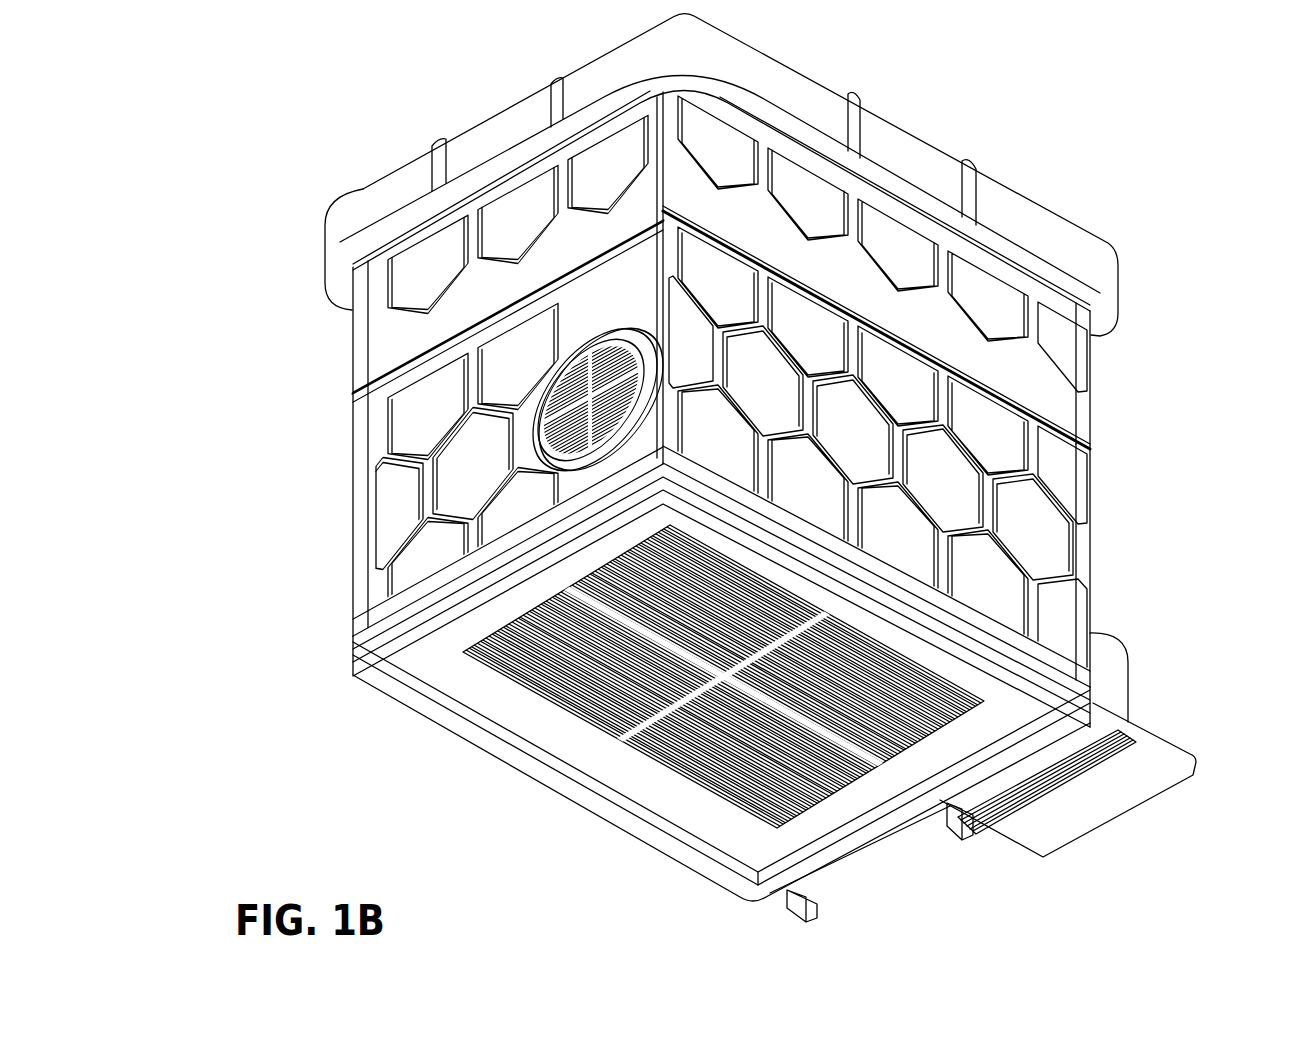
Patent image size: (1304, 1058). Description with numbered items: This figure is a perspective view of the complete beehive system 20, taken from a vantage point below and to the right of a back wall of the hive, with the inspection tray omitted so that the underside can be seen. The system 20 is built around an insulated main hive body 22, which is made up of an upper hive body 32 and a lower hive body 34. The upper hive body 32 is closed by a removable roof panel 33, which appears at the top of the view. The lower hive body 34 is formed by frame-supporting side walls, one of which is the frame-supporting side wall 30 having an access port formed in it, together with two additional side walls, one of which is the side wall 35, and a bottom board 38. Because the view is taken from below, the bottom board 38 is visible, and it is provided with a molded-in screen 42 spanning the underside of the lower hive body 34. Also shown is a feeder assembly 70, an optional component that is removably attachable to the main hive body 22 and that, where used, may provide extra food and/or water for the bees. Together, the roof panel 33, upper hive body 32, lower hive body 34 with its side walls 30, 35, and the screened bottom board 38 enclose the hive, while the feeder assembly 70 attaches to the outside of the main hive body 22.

The beehive system 20 is at (1103, 188).
The main hive body 22 is at (340, 334).
The frame-supporting side wall 30 is at (598, 384).
The upper hive body 32 is at (1090, 385).
The removable roof panel 33 is at (1121, 278).
The lower hive body 34 is at (1090, 524).
The side wall 35 is at (1048, 467).
The bottom board 38 is at (390, 689).
The molded-in screen 42 is at (714, 780).
The feeder assembly 70 is at (1181, 700).